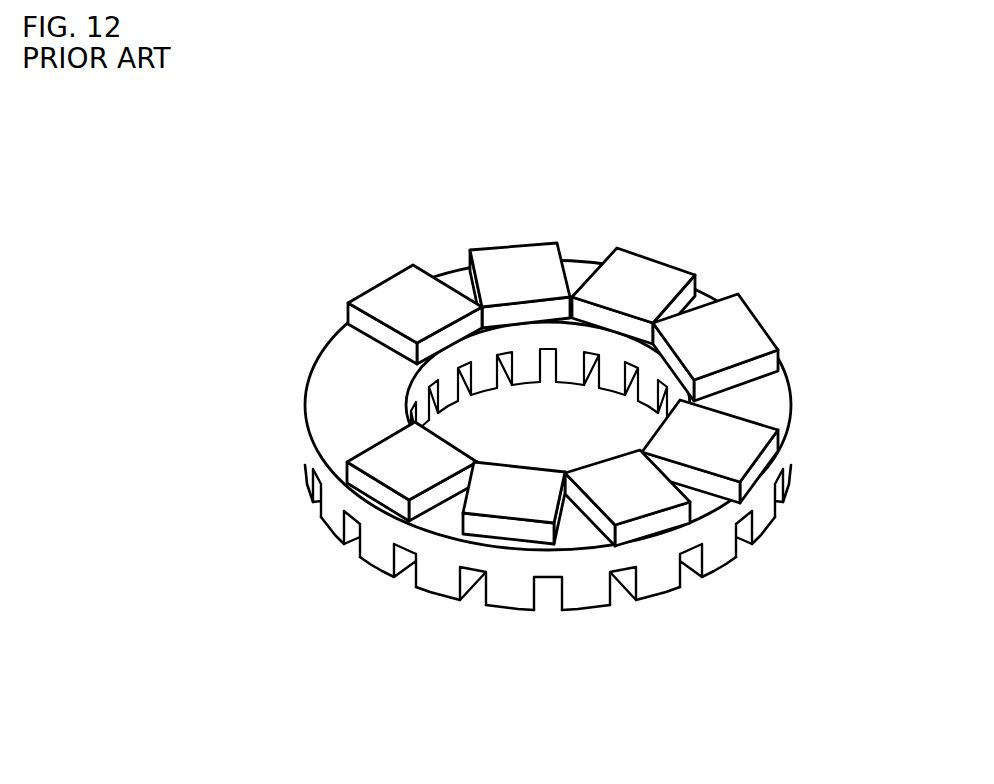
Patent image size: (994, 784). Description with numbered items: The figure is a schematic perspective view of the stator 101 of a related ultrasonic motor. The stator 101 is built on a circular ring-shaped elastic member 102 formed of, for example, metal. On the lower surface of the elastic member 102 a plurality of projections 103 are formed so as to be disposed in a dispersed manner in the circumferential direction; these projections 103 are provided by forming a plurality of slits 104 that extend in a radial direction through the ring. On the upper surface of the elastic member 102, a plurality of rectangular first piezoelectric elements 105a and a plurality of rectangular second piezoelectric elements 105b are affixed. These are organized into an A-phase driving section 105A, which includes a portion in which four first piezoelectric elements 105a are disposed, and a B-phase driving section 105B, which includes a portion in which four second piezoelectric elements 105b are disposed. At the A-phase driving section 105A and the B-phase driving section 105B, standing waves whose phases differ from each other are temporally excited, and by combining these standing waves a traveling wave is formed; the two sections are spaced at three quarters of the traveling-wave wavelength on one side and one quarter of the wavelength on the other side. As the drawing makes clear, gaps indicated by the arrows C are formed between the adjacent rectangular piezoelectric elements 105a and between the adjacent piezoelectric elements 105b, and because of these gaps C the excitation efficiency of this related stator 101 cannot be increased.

The stator 101 is at (379, 188).
The elastic member 102 is at (304, 384).
The projections 103 is at (437, 578).
The slits 104 is at (405, 578).
The A-phase driving section 105A is at (548, 407).
The B-phase driving section 105B is at (790, 410).
The first piezoelectric elements 105a is at (727, 450).
The second piezoelectric elements 105b is at (348, 303).
The gaps C is at (461, 283).